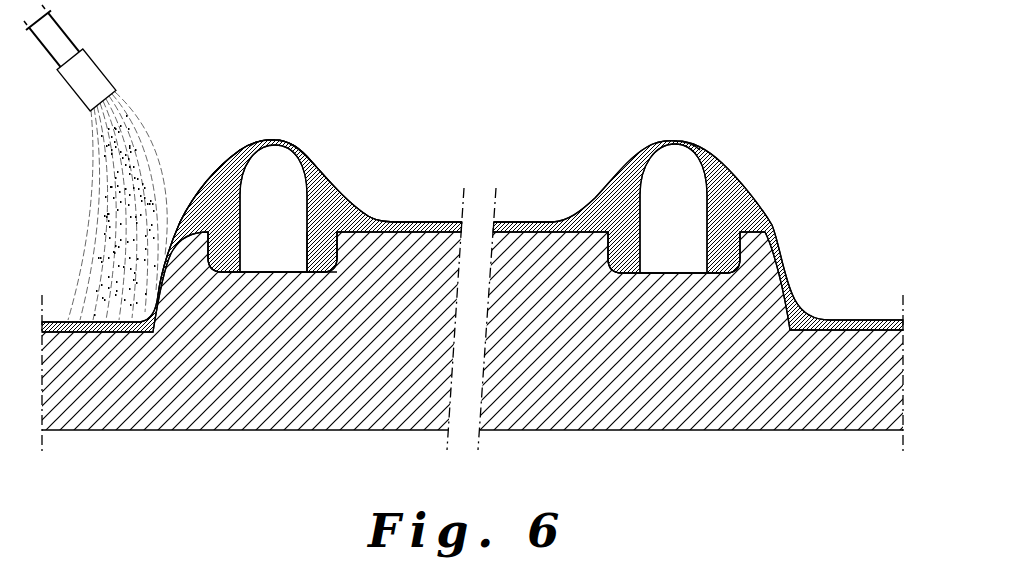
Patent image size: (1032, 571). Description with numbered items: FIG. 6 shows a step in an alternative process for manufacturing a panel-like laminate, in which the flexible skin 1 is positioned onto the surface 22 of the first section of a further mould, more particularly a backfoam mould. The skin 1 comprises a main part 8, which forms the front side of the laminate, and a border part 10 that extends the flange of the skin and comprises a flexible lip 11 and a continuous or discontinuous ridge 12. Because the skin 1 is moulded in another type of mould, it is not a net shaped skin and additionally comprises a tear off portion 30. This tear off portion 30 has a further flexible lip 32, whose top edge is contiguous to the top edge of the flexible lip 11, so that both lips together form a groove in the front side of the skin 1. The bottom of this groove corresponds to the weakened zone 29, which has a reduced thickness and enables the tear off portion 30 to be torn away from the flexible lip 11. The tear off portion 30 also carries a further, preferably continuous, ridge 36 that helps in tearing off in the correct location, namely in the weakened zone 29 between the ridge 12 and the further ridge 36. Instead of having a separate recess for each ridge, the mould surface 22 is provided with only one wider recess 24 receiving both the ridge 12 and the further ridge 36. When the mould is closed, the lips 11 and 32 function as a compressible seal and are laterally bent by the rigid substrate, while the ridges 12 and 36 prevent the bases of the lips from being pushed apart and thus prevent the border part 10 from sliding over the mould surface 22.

The flexible skin 1 is at (41, 320).
The main part 8 is at (75, 322).
The border part 10 is at (205, 200).
The flexible lip 11 is at (238, 153).
The ridge 12 is at (225, 257).
The mould surface 22 is at (447, 215).
The recess 24 is at (323, 257).
The weakened zone 29 is at (277, 140).
The tear off portion 30 is at (553, 220).
The further flexible lip 32 is at (317, 167).
The further ridge 36 is at (440, 222).